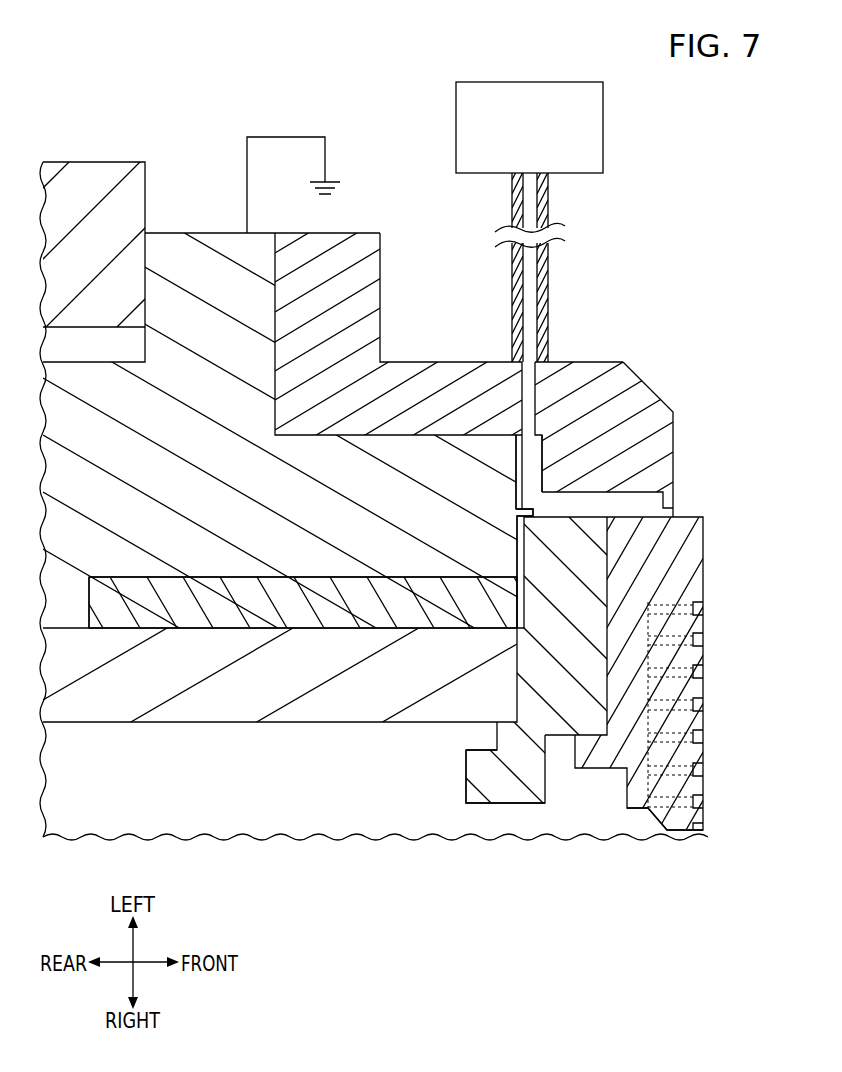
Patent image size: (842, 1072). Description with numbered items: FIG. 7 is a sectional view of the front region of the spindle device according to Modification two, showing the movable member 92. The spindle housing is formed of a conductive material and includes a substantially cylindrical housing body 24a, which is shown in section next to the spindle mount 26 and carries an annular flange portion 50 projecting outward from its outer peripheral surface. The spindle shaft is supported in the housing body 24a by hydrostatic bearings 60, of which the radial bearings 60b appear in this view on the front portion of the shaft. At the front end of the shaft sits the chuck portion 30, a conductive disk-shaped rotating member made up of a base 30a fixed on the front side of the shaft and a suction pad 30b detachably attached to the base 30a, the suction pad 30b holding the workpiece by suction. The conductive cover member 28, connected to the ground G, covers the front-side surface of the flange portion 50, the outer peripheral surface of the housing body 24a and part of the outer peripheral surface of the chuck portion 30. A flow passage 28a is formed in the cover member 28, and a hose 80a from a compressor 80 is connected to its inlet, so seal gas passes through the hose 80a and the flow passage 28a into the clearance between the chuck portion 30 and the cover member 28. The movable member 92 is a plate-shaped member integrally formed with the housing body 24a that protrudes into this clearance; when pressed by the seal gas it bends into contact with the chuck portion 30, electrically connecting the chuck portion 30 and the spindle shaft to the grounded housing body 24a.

The spindle mount 26 is at (92, 180).
The flange portion 50 is at (223, 257).
The housing body 24a is at (288, 535).
The cover member 28 is at (462, 370).
The flow passage 28a is at (545, 393).
The movable member 92 is at (528, 505).
The compressor 80 is at (587, 128).
The hose 80a is at (540, 216).
The ground G is at (327, 180).
The chuck portion 30 is at (720, 595).
The base 30a is at (497, 790).
The suction pad 30b is at (640, 802).
The bearings 60 is at (308, 737).
The radial bearings 60b is at (358, 622).